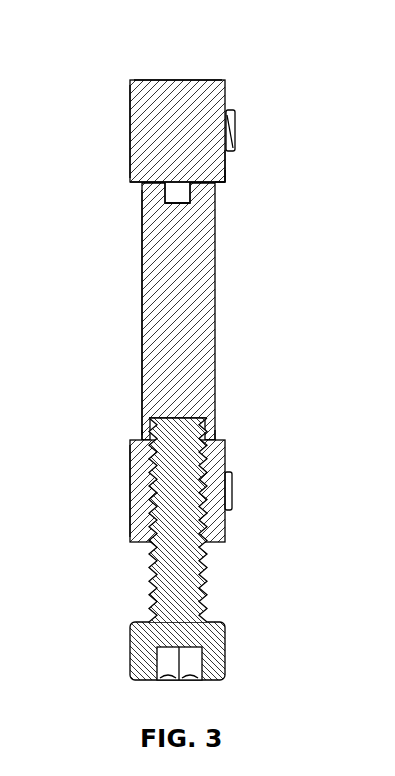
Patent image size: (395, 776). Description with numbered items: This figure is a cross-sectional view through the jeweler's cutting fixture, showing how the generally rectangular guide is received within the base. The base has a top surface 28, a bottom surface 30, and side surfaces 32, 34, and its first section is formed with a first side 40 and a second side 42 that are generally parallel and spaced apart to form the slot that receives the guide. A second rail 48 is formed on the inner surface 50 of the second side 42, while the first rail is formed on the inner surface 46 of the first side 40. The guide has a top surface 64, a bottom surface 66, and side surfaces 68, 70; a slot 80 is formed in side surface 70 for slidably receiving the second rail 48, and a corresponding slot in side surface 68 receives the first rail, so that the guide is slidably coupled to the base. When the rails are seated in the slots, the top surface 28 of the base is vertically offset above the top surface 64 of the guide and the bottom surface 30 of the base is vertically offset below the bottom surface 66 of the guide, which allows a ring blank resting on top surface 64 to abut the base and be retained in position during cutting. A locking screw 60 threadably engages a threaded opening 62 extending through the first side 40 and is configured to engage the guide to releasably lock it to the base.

The top surface 28 is at (226, 98).
The bottom surface 30 is at (133, 113).
The side surface 34 is at (168, 90).
The second side 42 is at (227, 175).
The inner surface 50 is at (217, 185).
The side surface 70 is at (150, 181).
The second rail 48 is at (166, 189).
The slot 80 is at (180, 204).
The top surface 64 is at (216, 310).
The bottom surface 66 is at (141, 285).
The side surface 68 is at (141, 440).
The inner surface 46 is at (217, 437).
The first side 40 is at (226, 462).
The threaded opening 62 is at (150, 478).
The side surface 32 is at (215, 543).
The locking screw 60 is at (133, 645).